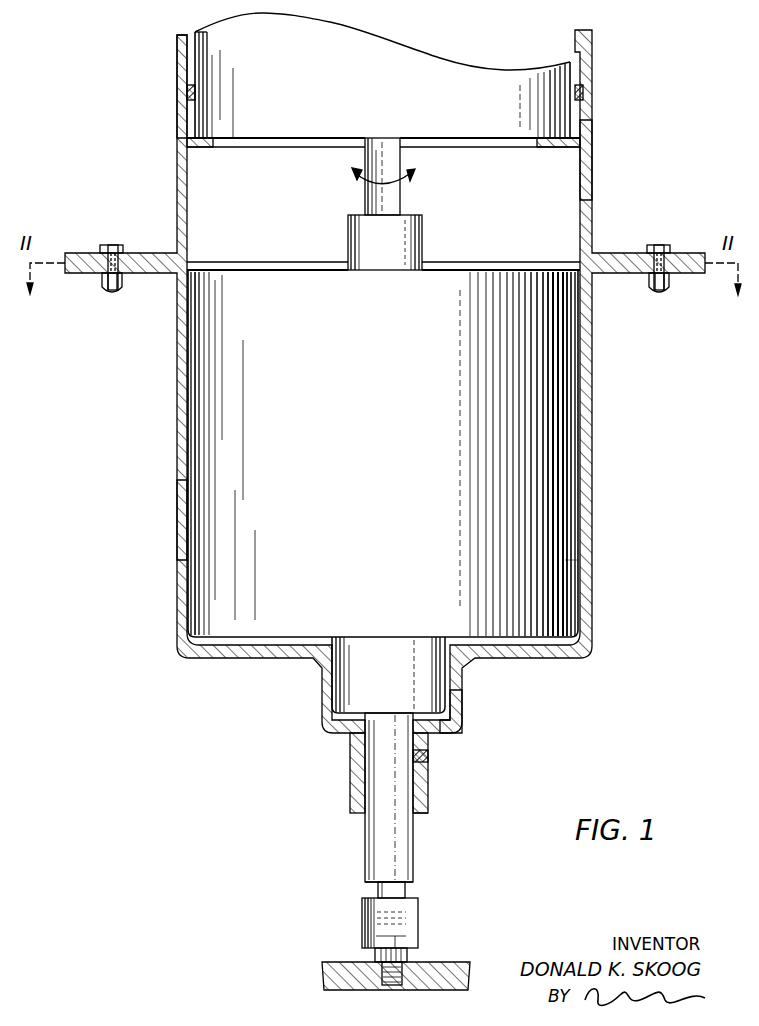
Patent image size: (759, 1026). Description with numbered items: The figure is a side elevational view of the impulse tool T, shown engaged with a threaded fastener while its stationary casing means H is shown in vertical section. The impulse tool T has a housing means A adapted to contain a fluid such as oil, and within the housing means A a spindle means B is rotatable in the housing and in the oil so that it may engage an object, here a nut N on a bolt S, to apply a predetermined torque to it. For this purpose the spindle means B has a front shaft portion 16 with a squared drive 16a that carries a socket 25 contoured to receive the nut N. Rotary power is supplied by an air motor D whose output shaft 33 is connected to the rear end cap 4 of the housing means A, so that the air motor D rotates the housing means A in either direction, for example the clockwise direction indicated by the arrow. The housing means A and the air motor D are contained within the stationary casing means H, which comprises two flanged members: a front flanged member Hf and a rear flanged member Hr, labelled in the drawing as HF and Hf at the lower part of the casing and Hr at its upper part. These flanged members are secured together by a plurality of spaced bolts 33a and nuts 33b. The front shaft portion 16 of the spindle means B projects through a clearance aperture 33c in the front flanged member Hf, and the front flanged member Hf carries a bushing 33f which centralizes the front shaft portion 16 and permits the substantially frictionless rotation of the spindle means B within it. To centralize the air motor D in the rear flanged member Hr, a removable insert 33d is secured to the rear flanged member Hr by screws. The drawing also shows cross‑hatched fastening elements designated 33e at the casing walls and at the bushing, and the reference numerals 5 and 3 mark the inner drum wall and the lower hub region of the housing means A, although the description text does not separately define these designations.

The air motor D is at (458, 58).
The stationary casing means H is at (176, 436).
The rear flanged member Hr is at (180, 148).
The housing flange HF is at (178, 516).
The front flanged member Hf is at (462, 722).
The impulse tool T is at (595, 156).
The housing means A is at (580, 437).
The drum wall 5 is at (572, 566).
The hub 3 is at (396, 652).
The rear end cap 4 is at (419, 242).
The output shaft 33 is at (400, 199).
The bolts 33a is at (112, 246).
The nuts 33b is at (112, 293).
The clearance aperture 33c is at (428, 816).
The removable insert 33d is at (226, 148).
The set screw 33e is at (186, 92).
The bushing 33f is at (430, 805).
The spindle means B is at (366, 845).
The front shaft portion 16 is at (414, 876).
The squared drive 16a is at (388, 893).
The socket 25 is at (418, 908).
The nut N is at (375, 957).
The bolt S is at (402, 970).